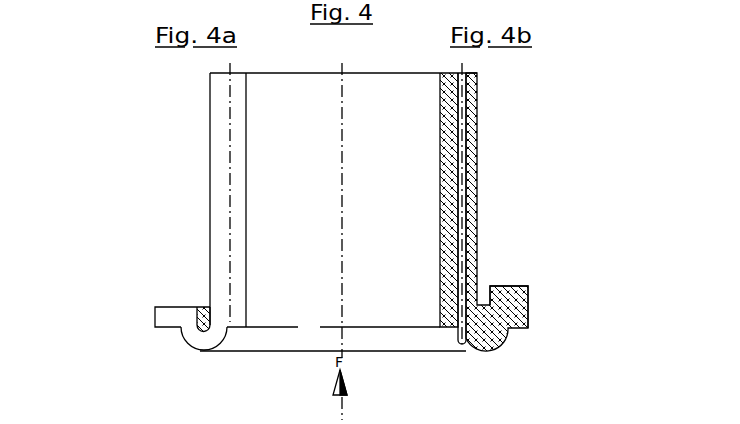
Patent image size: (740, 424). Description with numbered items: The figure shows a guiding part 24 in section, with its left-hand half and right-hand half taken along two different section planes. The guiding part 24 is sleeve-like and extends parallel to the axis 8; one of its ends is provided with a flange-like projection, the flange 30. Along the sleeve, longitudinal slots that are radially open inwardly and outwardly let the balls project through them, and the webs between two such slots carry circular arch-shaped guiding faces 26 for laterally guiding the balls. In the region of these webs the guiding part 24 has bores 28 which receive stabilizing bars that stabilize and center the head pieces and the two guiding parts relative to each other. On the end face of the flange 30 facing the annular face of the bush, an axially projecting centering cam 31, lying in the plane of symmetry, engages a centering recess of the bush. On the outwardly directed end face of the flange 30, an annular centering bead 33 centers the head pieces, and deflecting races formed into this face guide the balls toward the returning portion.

In FIG. 4, the axis 8 is at (342, 196).
In FIG. 4B, the guiding part 24 is at (445, 150).
In FIG. 4A, the guiding face 26 is at (218, 149).
In FIG. 4B, the bore 28 is at (462, 344).
In FIG. 4B, the flange 30 is at (470, 336).
In FIG. 4B, the centering cam 31 is at (518, 299).
In FIG. 4A, the annular centering bead 33 is at (198, 349).